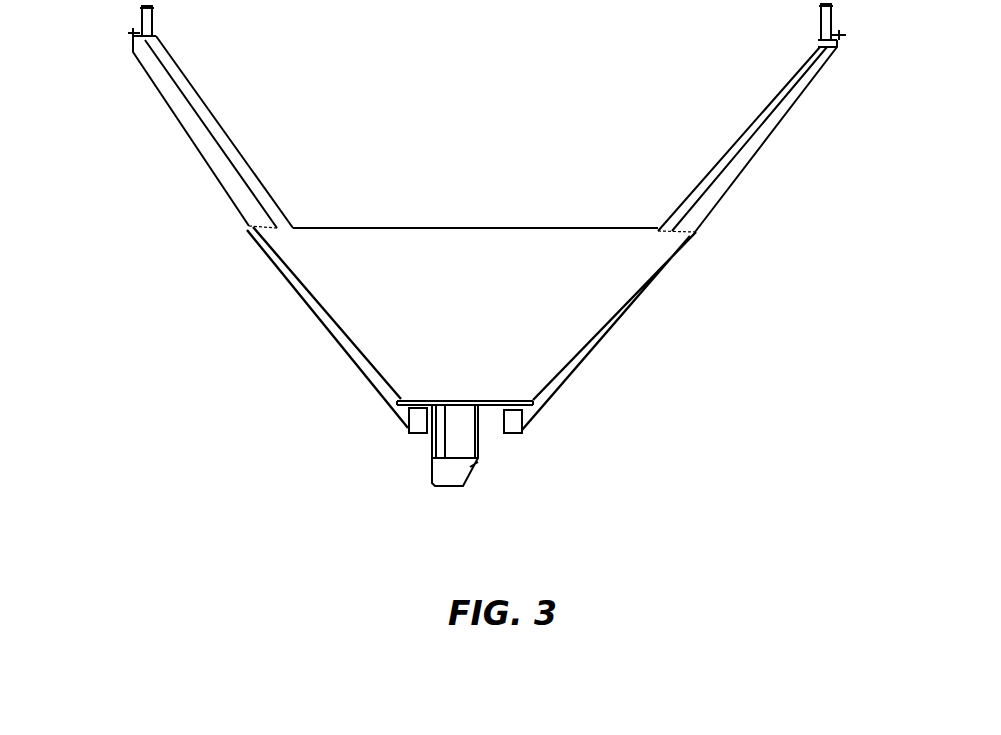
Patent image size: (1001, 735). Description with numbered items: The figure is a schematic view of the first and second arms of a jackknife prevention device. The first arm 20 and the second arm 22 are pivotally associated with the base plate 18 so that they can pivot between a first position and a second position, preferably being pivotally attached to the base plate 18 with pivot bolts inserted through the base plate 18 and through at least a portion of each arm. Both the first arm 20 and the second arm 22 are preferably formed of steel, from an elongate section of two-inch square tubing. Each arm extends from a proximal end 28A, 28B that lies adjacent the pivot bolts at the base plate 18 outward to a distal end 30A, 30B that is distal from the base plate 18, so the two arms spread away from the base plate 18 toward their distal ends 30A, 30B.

The base plate 18 is at (639, 310).
The first arm 20 is at (196, 143).
The second arm 22 is at (760, 157).
The proximal end 28A is at (408, 430).
The proximal end 28B is at (522, 430).
The distal end 30A is at (134, 44).
The distal end 30B is at (840, 50).